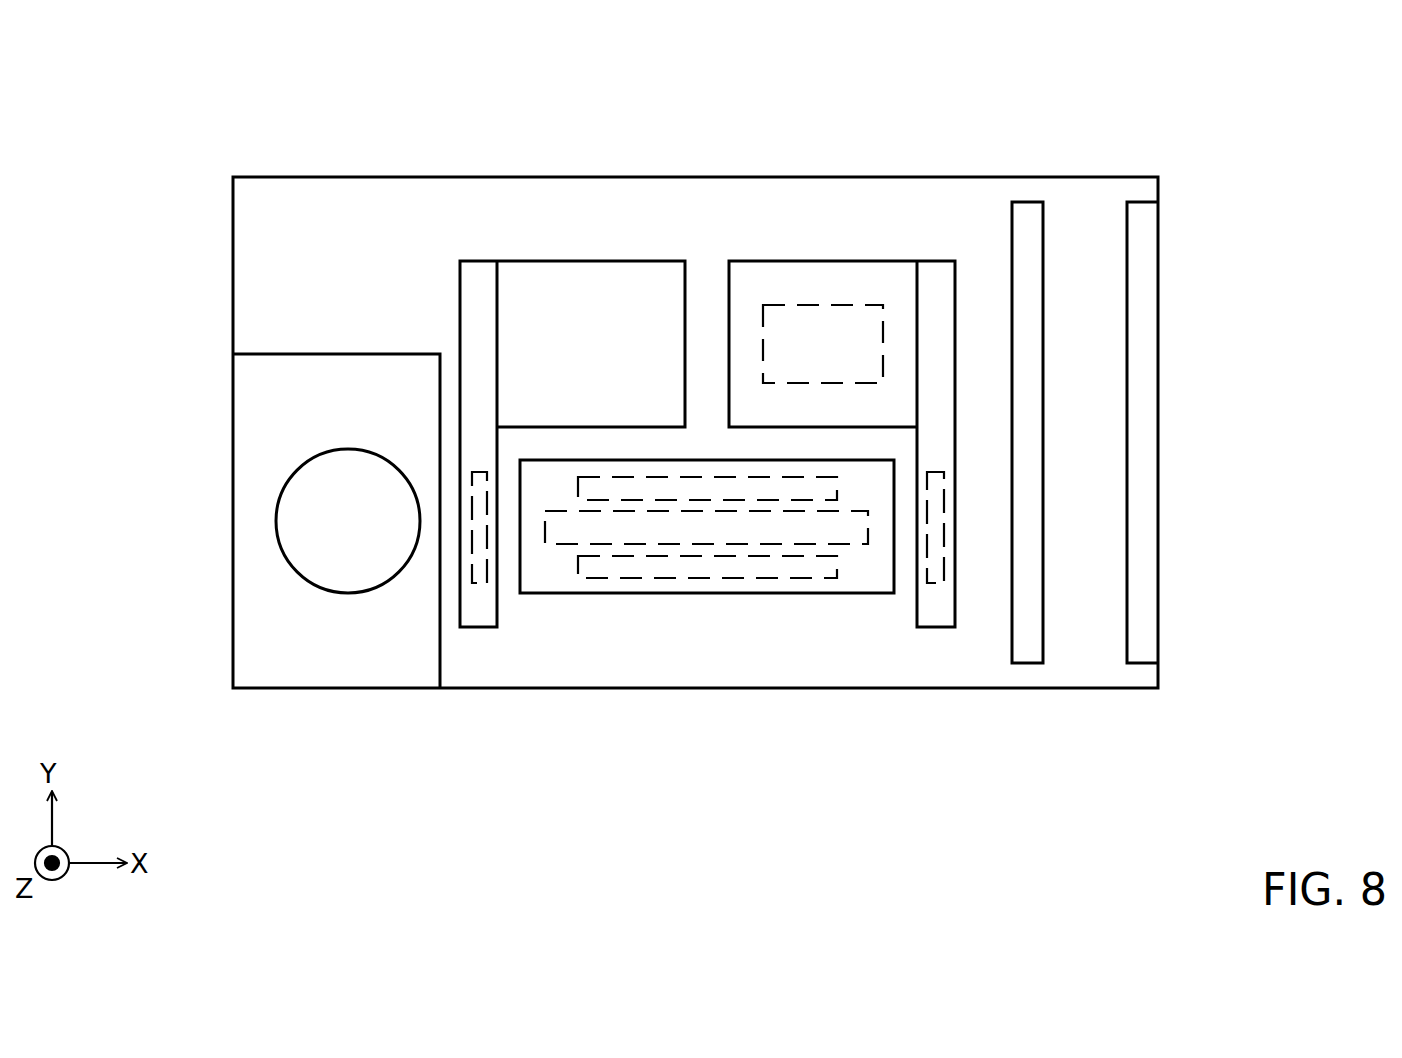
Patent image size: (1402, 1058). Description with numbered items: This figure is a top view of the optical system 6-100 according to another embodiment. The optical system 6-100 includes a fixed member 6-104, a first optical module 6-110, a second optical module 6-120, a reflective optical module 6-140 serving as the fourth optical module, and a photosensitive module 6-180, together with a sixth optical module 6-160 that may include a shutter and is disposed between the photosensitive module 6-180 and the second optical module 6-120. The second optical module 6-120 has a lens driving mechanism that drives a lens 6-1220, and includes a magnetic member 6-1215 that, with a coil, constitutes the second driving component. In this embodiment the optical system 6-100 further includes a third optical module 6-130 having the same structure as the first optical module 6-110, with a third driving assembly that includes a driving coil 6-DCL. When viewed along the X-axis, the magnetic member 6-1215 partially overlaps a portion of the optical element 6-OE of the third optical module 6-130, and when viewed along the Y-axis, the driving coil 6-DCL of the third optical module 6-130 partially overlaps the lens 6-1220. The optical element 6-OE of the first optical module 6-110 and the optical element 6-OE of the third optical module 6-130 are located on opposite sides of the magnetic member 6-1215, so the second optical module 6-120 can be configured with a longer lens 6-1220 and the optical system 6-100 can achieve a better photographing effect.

The optical system 6-100 is at (183, 75).
The fixed member 6-104 is at (354, 232).
The first optical module 6-110 is at (489, 258).
The second optical module 6-120 is at (560, 598).
The magnetic member 6-1215 is at (747, 492).
The lens 6-1220 is at (855, 532).
The third optical module 6-130 is at (898, 258).
The reflective optical module 6-140 is at (296, 405).
The sixth optical module 6-160 is at (1028, 200).
The photosensitive module 6-180 is at (1143, 200).
The driving coil 6-DCL is at (797, 332).
The optical element 6-OE is at (478, 540).